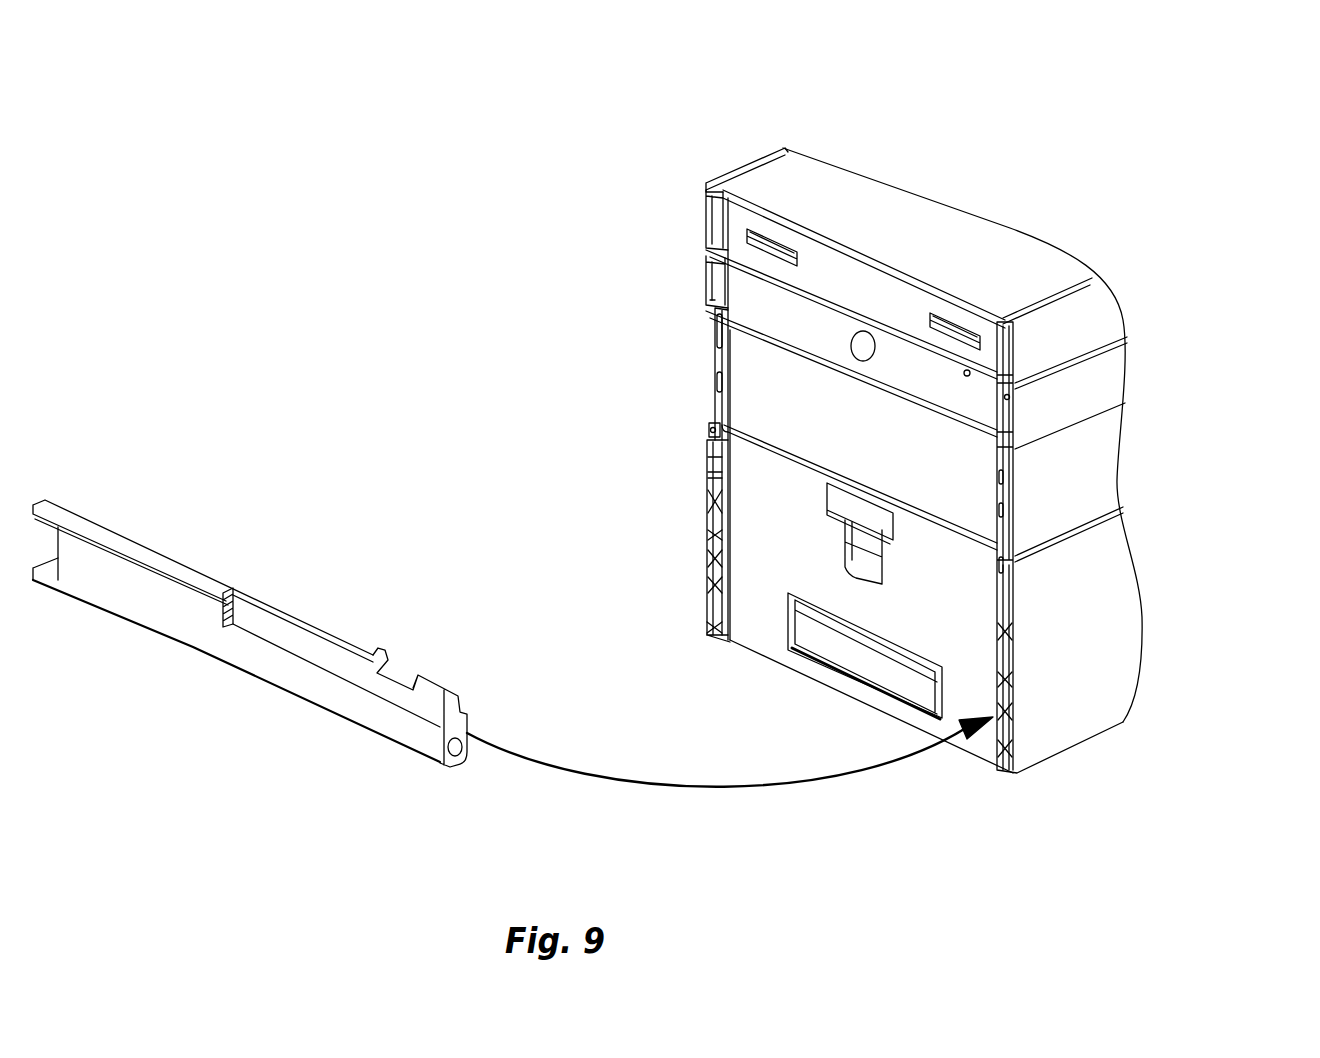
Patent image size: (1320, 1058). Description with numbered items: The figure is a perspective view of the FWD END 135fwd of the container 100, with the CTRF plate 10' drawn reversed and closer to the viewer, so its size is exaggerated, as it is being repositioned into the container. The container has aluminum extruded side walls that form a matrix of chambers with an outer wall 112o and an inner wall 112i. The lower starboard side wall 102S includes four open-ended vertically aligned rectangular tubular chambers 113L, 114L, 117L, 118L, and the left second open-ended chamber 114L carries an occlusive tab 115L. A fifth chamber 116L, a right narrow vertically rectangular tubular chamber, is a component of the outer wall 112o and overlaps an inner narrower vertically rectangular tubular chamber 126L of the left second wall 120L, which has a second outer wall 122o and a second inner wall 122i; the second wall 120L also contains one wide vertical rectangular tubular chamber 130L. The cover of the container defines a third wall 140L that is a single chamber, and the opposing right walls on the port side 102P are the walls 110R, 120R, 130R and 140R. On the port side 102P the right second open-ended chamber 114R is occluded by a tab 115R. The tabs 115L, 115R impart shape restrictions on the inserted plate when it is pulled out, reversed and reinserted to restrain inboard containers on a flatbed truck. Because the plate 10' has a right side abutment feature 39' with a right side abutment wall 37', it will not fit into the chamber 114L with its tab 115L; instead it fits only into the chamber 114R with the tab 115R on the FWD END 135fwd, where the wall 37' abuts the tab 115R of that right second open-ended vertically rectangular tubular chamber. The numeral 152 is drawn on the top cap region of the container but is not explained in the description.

The container 100 is at (1030, 118).
The lower starboard side wall 102S is at (488, 276).
The port-side wall 102P is at (1180, 512).
The top cap rail 152 is at (752, 172).
The third wall 140L is at (704, 210).
The right third wall 140R is at (1105, 320).
The wide vertical rectangular tubular chamber 130L is at (703, 277).
The right wide chamber wall 130R is at (1105, 378).
The left second wall 120L is at (712, 356).
The right second wall 120R is at (1075, 481).
The second outer wall 122o is at (698, 321).
The second inner wall 122i is at (735, 372).
The inner narrower vertically rectangular tubular chamber 126L is at (709, 425).
The fifth chamber 116L is at (716, 453).
The open-ended vertically aligned rectangular tubular chamber 117L is at (713, 513).
The open-ended vertically aligned rectangular tubular chamber 118L is at (718, 477).
The occlusive tab 115L is at (716, 551).
The occlusive tab 115R is at (1006, 697).
The left second open-ended chamber 114L is at (718, 571).
The right second open-ended chamber 114R is at (1003, 705).
The open-ended vertically aligned rectangular tubular chamber 113L is at (709, 622).
The outer wall 112o is at (704, 607).
The inner wall 112i is at (731, 621).
The first right wall 110R is at (1135, 612).
The FWD END 135fwd is at (808, 550).
The CTRF plate 10' is at (250, 556).
The right side abutment wall 37' is at (297, 554).
The right side abutment feature 39' is at (100, 644).